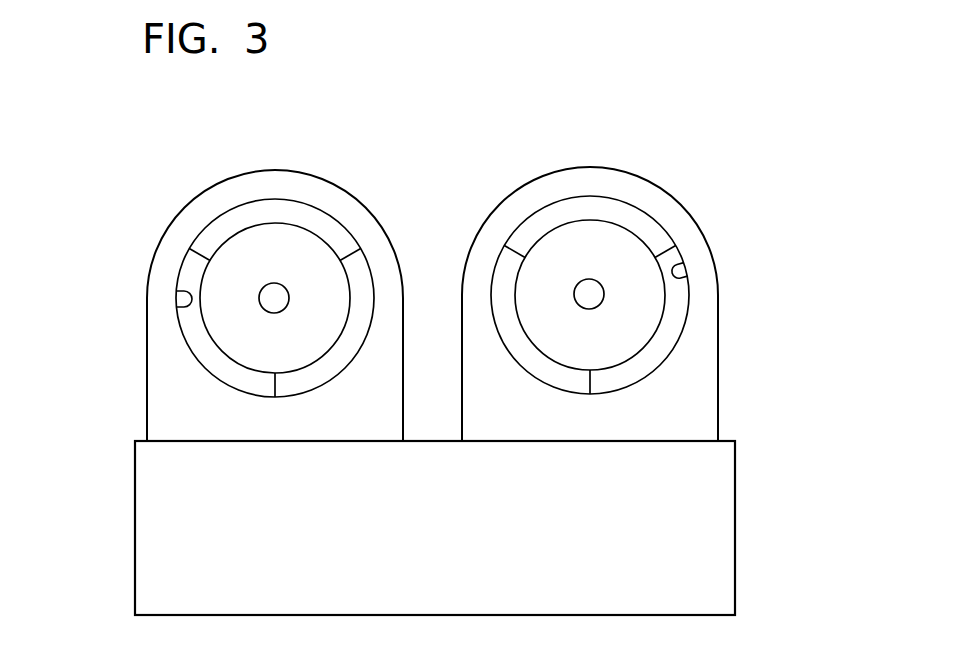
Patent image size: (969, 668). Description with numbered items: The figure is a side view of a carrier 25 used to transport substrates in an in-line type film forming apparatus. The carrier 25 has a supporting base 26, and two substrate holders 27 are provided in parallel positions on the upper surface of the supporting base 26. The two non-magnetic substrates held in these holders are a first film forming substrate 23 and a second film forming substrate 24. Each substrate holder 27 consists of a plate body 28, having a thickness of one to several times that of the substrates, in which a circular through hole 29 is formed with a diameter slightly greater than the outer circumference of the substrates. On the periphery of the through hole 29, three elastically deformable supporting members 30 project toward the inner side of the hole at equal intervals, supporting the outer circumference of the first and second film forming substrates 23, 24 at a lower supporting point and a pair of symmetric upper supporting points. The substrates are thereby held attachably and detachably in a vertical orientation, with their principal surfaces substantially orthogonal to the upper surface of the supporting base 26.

The first film forming substrate 23 is at (290, 247).
The second film forming substrate 24 is at (607, 245).
The carrier 25 is at (742, 400).
The supporting base 26 is at (707, 517).
The substrate holder 27 is at (213, 195).
The plate body 28 is at (180, 392).
The through hole 29 is at (178, 294).
The supporting member 30 is at (202, 247).